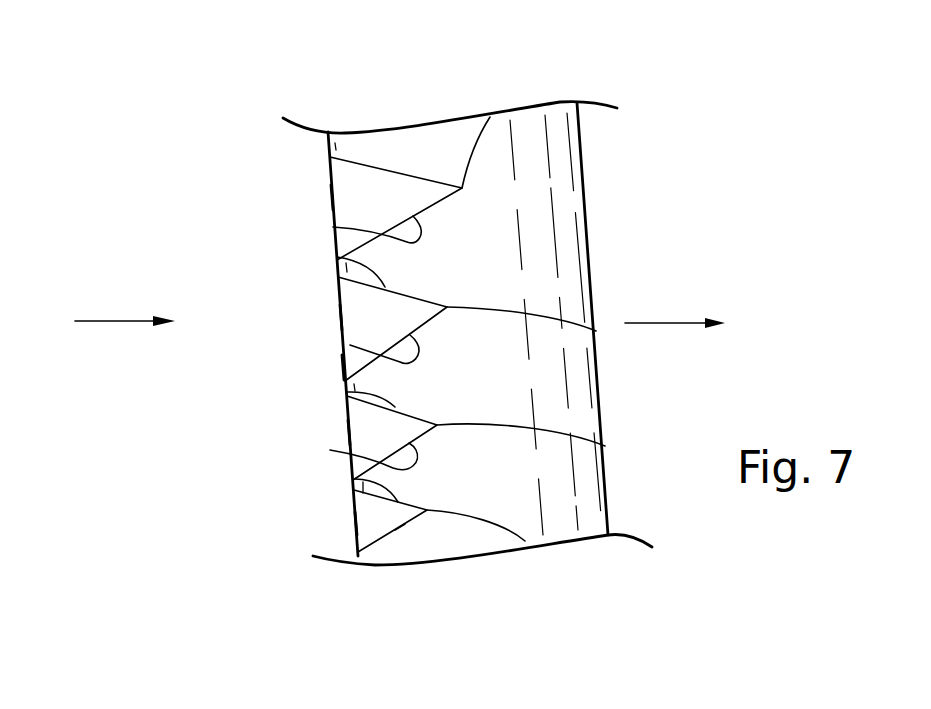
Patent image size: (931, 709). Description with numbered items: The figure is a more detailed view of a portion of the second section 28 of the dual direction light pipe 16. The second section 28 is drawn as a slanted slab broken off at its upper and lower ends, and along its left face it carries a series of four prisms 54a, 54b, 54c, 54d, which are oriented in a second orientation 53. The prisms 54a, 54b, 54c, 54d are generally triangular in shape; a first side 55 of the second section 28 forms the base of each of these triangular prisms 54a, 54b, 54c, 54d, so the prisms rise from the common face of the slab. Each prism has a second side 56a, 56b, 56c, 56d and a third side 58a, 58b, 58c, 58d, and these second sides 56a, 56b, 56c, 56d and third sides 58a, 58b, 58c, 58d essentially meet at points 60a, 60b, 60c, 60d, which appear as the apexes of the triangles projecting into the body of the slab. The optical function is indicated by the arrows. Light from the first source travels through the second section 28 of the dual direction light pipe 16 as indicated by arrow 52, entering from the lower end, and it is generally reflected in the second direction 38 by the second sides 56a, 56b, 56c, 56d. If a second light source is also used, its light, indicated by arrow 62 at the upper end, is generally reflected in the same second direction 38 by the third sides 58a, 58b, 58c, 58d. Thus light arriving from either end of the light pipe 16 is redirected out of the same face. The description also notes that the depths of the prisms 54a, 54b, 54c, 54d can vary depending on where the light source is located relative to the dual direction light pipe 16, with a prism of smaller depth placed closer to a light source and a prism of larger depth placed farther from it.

The dual direction light pipe 16 is at (605, 152).
The second section 28 is at (322, 368).
The second direction 38 is at (655, 322).
The arrow 52 is at (499, 603).
The second orientation 53 is at (103, 320).
The first side 55 is at (328, 138).
The arrow 62 is at (441, 87).
The prism 54a is at (353, 523).
The prism 54b is at (347, 432).
The prism 54c is at (340, 317).
The prism 54d is at (332, 198).
The second side 56a is at (400, 527).
The second side 56b is at (330, 450).
The second side 56c is at (350, 345).
The second side 56d is at (333, 227).
The third side 58a is at (355, 478).
The third side 58b is at (347, 395).
The third side 58c is at (335, 257).
The third side 58d is at (400, 172).
The point 60a is at (525, 541).
The point 60b is at (605, 446).
The point 60c is at (596, 331).
The point 60d is at (490, 117).